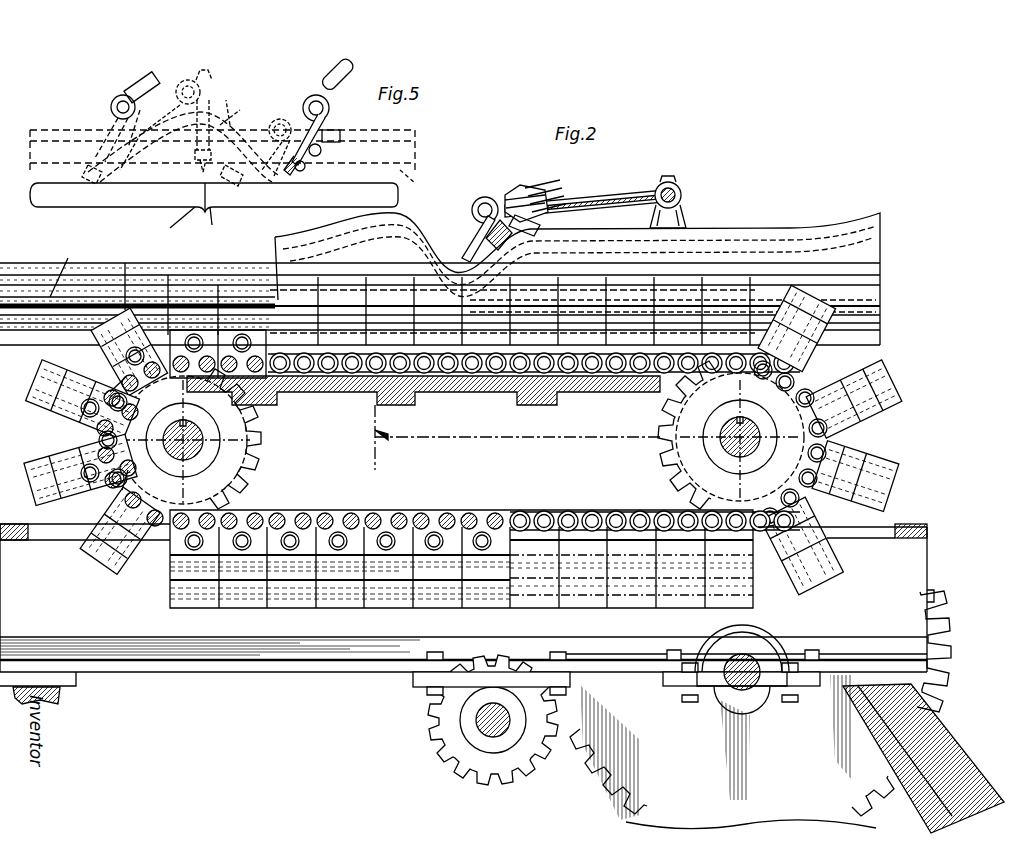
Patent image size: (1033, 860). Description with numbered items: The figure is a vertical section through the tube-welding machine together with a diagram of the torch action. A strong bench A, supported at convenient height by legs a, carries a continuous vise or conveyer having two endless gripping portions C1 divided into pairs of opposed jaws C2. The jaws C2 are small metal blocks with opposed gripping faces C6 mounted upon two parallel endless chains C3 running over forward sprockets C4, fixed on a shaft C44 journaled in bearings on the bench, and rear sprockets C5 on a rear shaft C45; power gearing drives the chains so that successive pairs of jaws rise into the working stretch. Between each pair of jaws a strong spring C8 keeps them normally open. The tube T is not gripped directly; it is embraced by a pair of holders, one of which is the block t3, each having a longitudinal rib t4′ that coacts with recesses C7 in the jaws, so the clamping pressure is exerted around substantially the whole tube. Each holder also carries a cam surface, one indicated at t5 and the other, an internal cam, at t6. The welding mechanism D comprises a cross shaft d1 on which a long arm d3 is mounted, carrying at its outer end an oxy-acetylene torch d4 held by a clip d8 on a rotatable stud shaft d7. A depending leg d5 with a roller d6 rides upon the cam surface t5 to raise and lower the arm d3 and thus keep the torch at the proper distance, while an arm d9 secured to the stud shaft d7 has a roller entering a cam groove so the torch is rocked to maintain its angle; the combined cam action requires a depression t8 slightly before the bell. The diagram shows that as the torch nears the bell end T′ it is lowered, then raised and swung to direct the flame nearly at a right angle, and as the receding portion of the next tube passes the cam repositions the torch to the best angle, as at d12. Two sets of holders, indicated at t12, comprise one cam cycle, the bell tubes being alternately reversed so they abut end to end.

In FIG. 5, the tube T is at (104, 200).
In FIG. 5, the bell-shaped end T′ is at (169, 225).
In FIG. 2, the holder t3 is at (840, 260).
In FIG. 2, the longitudinal rib t4′ is at (840, 302).
In FIG. 5, the cam surface t5 is at (415, 182).
In FIG. 2, the cam surface t5 is at (445, 215).
In FIG. 5, the cam surface t6 is at (73, 130).
In FIG. 2, the cam surface t6 is at (760, 228).
In FIG. 2, the depressed cam portion t8 is at (465, 252).
In FIG. 2, the cam cycle of two holder sets t12 is at (517, 437).
In FIG. 2, the dog support d is at (686, 218).
In FIG. 2, the cross shaft d1 is at (682, 195).
In FIG. 2, the long arm d3 is at (600, 200).
In FIG. 5, the oxy-acetylene torch d4 is at (305, 128).
In FIG. 2, the oxy-acetylene torch d4 is at (503, 198).
In FIG. 5, the depending leg d5 is at (322, 150).
In FIG. 5, the roller d6 is at (306, 166).
In FIG. 5, the stud shaft d7 is at (360, 80).
In FIG. 2, the stud shaft d7 is at (480, 200).
In FIG. 2, the clip d8 is at (545, 226).
In FIG. 5, the arm d9 is at (340, 132).
In FIG. 2, the arm d9 is at (510, 238).
In FIG. 5, the torch repositioned angular position d12 is at (124, 95).
In FIG. 5, the welding mechanism D is at (318, 78).
In FIG. 2, the welding mechanism D is at (605, 180).
In FIG. 2, the upper cutter chain run C′ is at (330, 410).
In FIG. 2, the endless gripping portion C1 is at (372, 508).
In FIG. 2, the jaw C2 is at (40, 428).
In FIG. 2, the endless chain C3 is at (494, 380).
In FIG. 2, the forward sprocket C4 is at (250, 466).
In FIG. 2, the forward shaft C44 is at (205, 440).
In FIG. 2, the rear sprocket C5 is at (670, 450).
In FIG. 2, the rear shaft C45 is at (720, 450).
In FIG. 2, the gripping face C6 is at (42, 372).
In FIG. 2, the recess C7 is at (40, 410).
In FIG. 2, the spring C8 is at (90, 398).
In FIG. 2, the bench A is at (245, 660).
In FIG. 2, the leg a is at (935, 719).